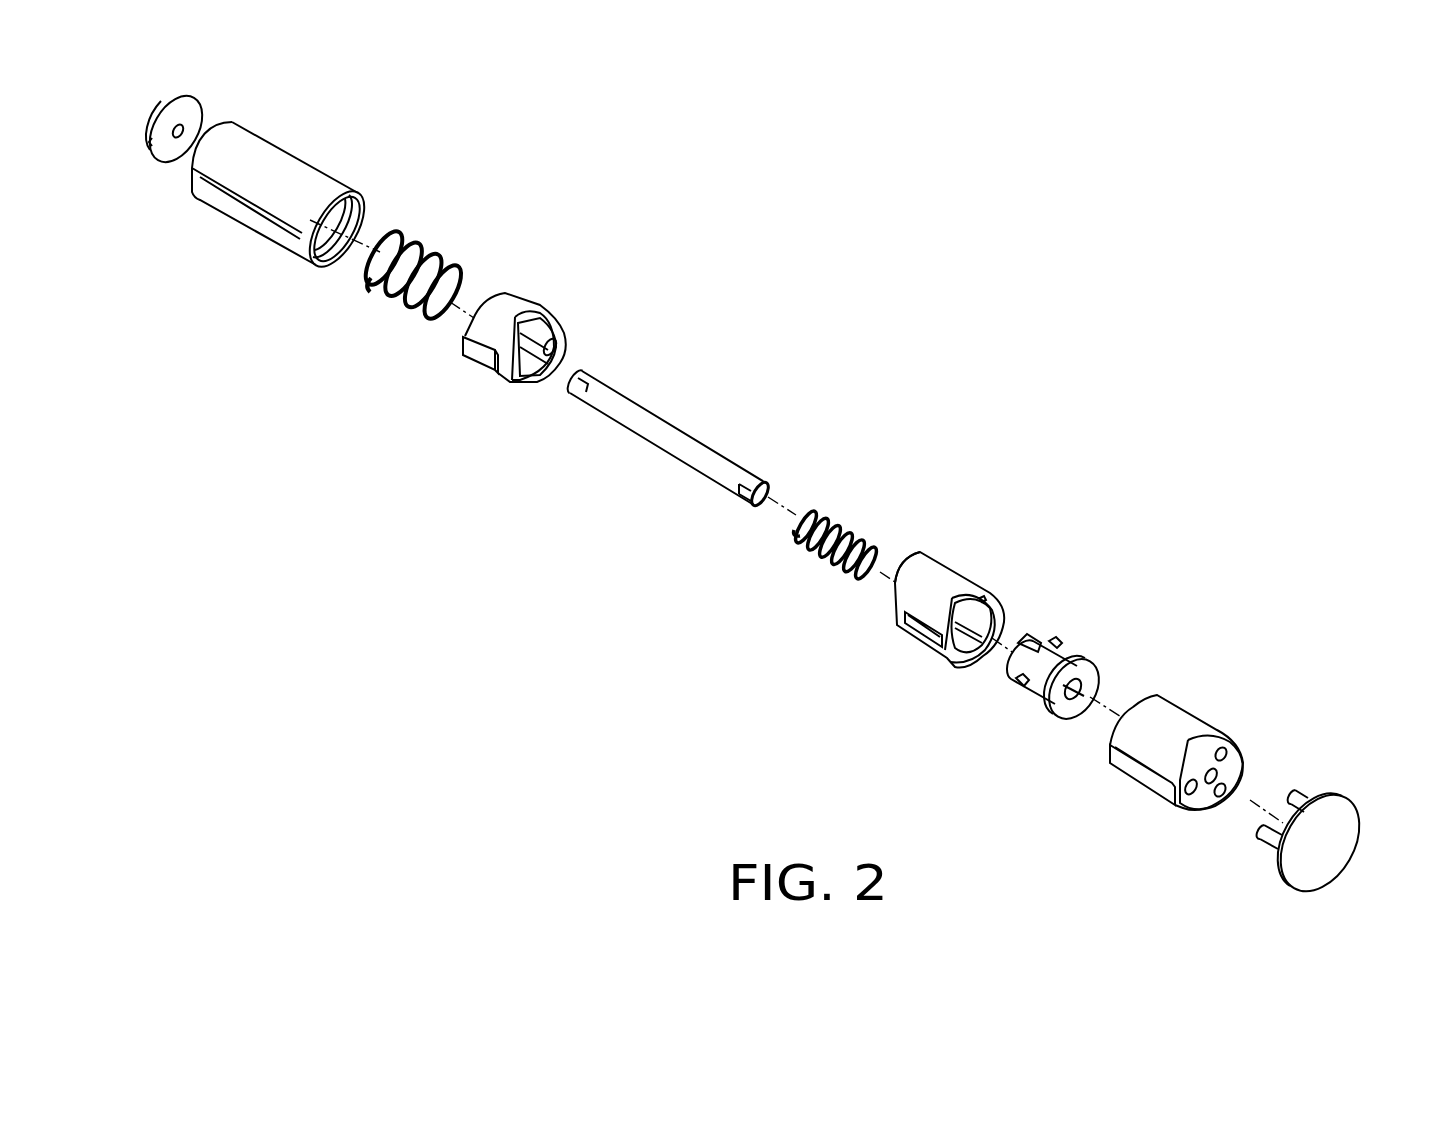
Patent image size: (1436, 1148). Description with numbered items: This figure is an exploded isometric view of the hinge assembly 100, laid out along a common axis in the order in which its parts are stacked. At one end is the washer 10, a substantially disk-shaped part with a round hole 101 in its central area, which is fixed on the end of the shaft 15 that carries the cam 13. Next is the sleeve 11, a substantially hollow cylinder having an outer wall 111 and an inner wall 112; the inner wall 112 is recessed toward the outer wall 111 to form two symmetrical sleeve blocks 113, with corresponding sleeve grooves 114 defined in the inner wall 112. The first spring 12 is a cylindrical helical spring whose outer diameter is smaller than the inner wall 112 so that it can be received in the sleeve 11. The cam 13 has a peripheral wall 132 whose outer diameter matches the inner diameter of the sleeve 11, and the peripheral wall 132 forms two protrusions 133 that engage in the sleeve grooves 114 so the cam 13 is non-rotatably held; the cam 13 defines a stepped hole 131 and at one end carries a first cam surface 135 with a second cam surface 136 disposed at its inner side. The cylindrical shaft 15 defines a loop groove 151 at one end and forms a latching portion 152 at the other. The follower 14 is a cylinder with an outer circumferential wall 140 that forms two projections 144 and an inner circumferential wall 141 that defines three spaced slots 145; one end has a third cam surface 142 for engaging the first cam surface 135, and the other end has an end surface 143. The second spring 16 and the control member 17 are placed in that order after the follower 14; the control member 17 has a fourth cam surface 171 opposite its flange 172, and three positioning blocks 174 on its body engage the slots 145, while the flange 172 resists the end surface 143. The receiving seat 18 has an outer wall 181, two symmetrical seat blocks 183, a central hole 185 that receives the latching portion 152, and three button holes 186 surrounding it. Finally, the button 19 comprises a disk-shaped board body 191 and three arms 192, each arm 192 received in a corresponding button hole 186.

The hinge assembly 100 is at (779, 495).
The washer 10 is at (199, 144).
The round hole 101 is at (176, 142).
The sleeve 11 is at (316, 214).
The outer wall 111 is at (308, 183).
The inner wall 112 is at (320, 247).
The sleeve blocks 113 is at (227, 198).
The sleeve grooves 114 is at (357, 207).
The first spring 12 is at (407, 243).
The cam 13 is at (547, 331).
The stepped hole 131 is at (553, 363).
The peripheral wall 132 is at (510, 302).
The protrusions 133 is at (487, 353).
The first cam surface 135 is at (543, 322).
The second cam surface 136 is at (558, 338).
The shaft 15 is at (646, 464).
The loop groove 151 is at (570, 387).
The latching portion 152 is at (747, 492).
The second spring 16 is at (830, 513).
The follower 14 is at (933, 632).
The outer circumferential wall 140 is at (913, 593).
The inner circumferential wall 141 is at (960, 673).
The third cam surface 142 is at (908, 550).
The end surface 143 is at (988, 593).
The projections 144 is at (917, 633).
The slots 145 is at (990, 655).
The control member 17 is at (1088, 675).
The fourth cam surface 171 is at (1022, 632).
The flange 172 is at (1087, 675).
The positioning blocks 174 is at (1017, 690).
The receiving seat 18 is at (1184, 767).
The outer wall 181 is at (1133, 732).
The seat blocks 183 is at (1130, 768).
The central hole 185 is at (1217, 773).
The button holes 186 is at (1192, 792).
The button 19 is at (1310, 833).
The board body 191 is at (1338, 842).
The arms 192 is at (1267, 838).